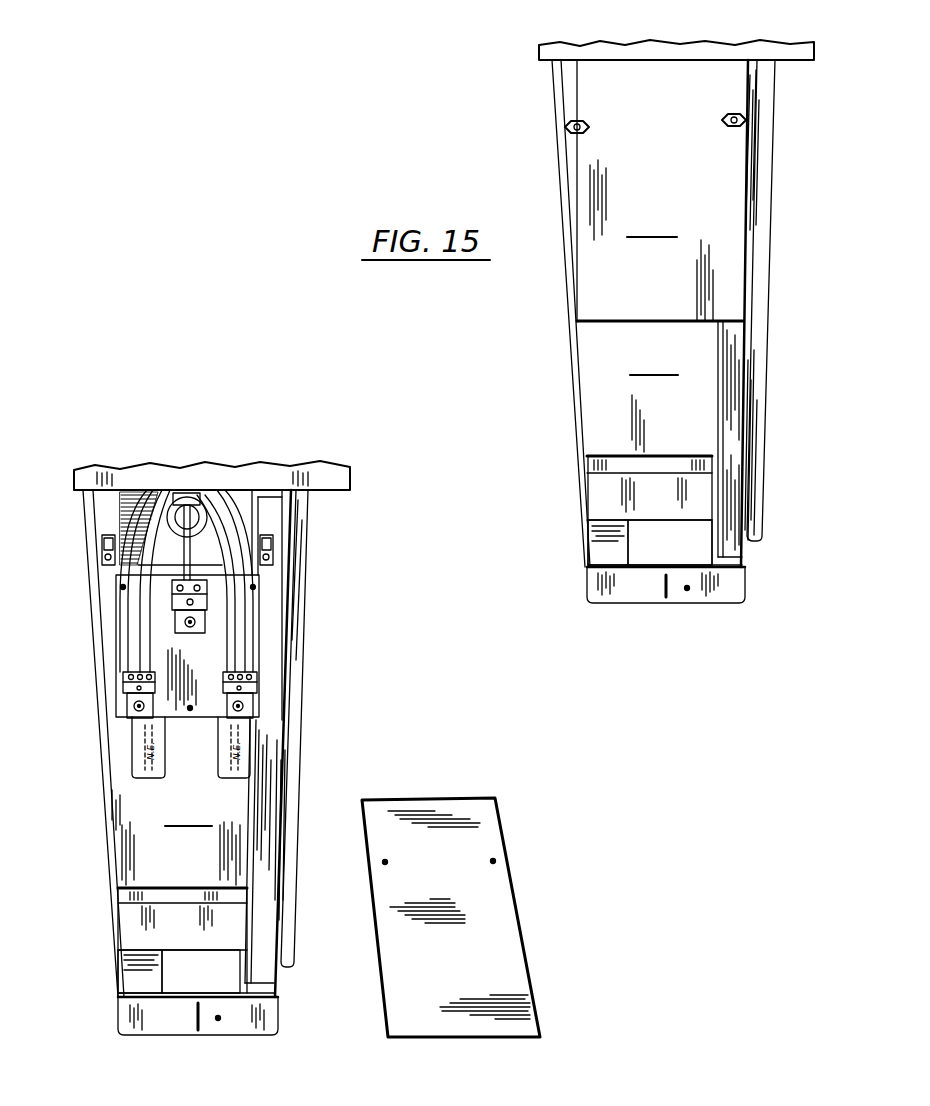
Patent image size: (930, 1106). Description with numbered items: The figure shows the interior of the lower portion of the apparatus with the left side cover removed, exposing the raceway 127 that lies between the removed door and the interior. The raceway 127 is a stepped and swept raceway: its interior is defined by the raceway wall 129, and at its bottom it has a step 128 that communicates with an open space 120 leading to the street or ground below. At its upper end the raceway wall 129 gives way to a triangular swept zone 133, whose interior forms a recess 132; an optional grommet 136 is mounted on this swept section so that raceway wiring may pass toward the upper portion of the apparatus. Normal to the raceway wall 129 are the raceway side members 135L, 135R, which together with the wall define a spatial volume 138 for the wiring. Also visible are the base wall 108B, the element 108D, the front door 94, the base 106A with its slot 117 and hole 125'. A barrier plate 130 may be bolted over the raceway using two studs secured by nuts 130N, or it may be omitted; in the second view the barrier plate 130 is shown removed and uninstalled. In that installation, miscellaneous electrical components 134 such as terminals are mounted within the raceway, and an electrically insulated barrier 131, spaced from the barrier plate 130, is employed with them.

In FIG. 15, the front door 94 is at (765, 320).
In FIG. 15, the base 106A is at (606, 596).
In FIG. 15, the base wall 108B is at (603, 539).
In FIG. 15, the bottom plate 108D is at (742, 570).
In FIG. 15, the slot 117 is at (660, 592).
In FIG. 15, the open space 120 is at (673, 545).
In FIG. 15, the hole 125' is at (715, 618).
In FIG. 15, the raceway 127 is at (596, 398).
In FIG. 15, the step 128 is at (604, 489).
In FIG. 16, the step 128 is at (135, 935).
In FIG. 15, the raceway wall 129 is at (654, 399).
In FIG. 16, the raceway wall 129 is at (176, 837).
In FIG. 15, the barrier plate 130 is at (728, 118).
In FIG. 16, the barrier plate 130 is at (499, 930).
In FIG. 15, the nuts 130N is at (730, 127).
In FIG. 16, the insulated barrier 131 is at (253, 618).
In FIG. 16, the recess 132 is at (242, 493).
In FIG. 16, the swept zone 133 is at (242, 518).
In FIG. 16, the miscellaneous electrical components 134 is at (257, 689).
In FIG. 15, the left raceway side member 135L is at (572, 342).
In FIG. 15, the right raceway side member 135R is at (745, 384).
In FIG. 16, the grommet 136 is at (187, 490).
In FIG. 15, the spatial volume 138 is at (700, 426).